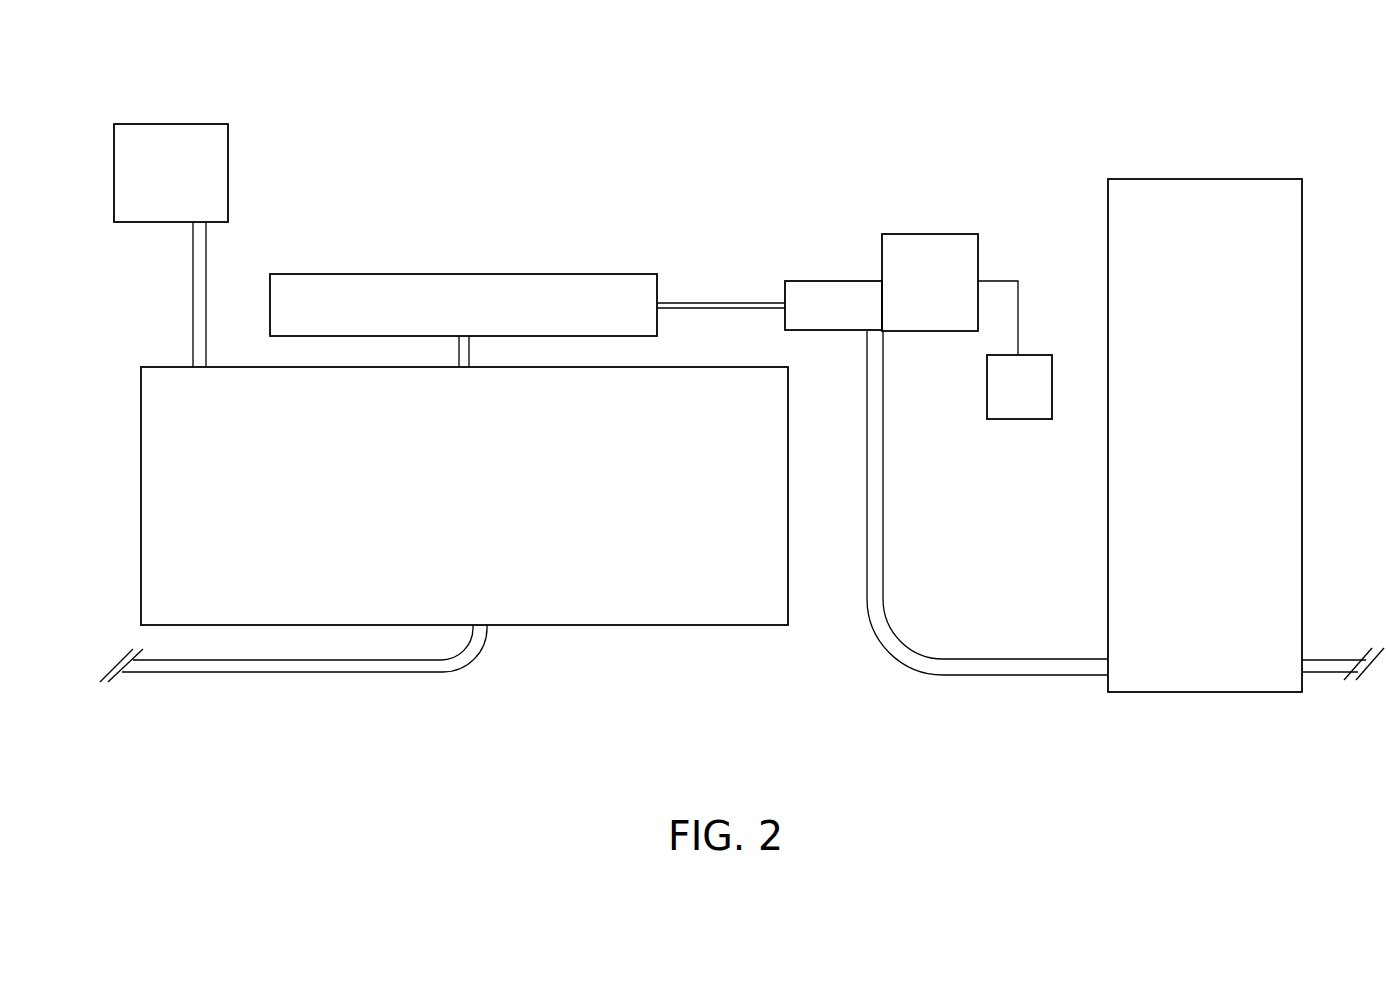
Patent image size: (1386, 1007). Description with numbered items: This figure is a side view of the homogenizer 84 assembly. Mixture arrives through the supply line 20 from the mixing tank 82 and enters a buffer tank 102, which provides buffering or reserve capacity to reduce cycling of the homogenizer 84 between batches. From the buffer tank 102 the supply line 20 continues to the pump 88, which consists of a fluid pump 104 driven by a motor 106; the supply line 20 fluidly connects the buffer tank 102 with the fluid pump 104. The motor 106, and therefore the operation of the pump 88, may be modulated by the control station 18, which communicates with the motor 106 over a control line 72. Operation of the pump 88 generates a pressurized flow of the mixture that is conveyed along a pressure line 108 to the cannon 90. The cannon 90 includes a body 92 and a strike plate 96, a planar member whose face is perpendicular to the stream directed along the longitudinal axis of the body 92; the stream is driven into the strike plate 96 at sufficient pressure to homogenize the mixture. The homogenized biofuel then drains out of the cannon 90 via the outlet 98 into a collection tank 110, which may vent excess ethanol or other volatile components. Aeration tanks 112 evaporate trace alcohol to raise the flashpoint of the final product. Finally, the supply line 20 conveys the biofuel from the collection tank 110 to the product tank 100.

The aeration tank 112 is at (228, 200).
The strike plate 96 is at (270, 283).
The body 92 is at (436, 274).
The cannon 90 is at (603, 250).
The outlet 98 is at (470, 342).
The pressure line 108 is at (693, 302).
The fluid pump 104 is at (808, 281).
The motor 106 is at (930, 234).
The pump 88 is at (886, 190).
The control line 72 is at (1018, 305).
The control station 18 is at (987, 367).
The buffer tank 102 is at (1108, 218).
The homogenizer 84 is at (1142, 138).
The collection tank 110 is at (788, 475).
The supply line 20 is at (883, 475).
The product tank 100 is at (153, 688).
The mixing tank 82 is at (1371, 694).